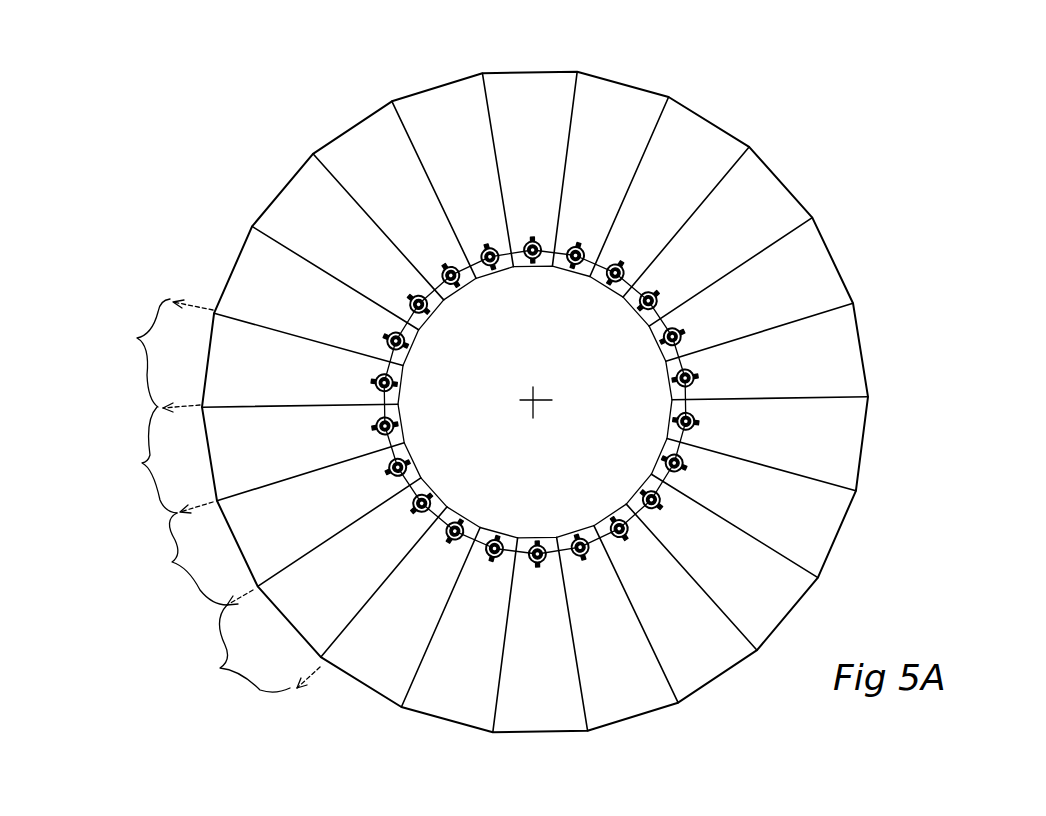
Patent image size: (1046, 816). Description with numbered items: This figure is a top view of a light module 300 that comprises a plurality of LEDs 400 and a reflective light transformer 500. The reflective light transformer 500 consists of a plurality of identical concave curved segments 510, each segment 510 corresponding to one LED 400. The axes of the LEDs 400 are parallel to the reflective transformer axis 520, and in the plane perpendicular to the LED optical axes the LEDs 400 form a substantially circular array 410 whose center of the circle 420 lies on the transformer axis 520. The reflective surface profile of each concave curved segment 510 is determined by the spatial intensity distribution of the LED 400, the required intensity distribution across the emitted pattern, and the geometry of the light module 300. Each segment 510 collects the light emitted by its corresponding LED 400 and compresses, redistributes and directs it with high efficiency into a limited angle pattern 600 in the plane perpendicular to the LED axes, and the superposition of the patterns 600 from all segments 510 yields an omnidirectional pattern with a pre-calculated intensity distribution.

The light module 300 is at (618, 805).
The LED 400 is at (403, 370).
The circular array 410 is at (467, 263).
The center of the circle 420 is at (537, 390).
The reflective light transformer 500 is at (688, 102).
The concave curved segment 510 is at (433, 720).
The reflective transformer axis 520 is at (589, 407).
The limited angle pattern 600 is at (130, 348).